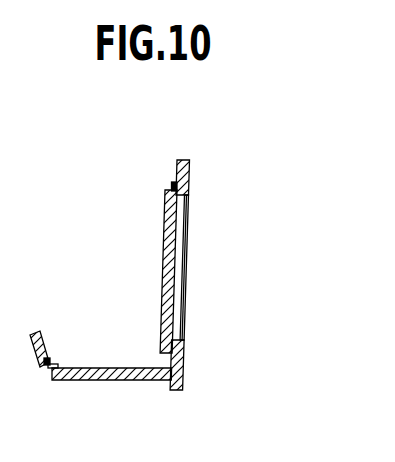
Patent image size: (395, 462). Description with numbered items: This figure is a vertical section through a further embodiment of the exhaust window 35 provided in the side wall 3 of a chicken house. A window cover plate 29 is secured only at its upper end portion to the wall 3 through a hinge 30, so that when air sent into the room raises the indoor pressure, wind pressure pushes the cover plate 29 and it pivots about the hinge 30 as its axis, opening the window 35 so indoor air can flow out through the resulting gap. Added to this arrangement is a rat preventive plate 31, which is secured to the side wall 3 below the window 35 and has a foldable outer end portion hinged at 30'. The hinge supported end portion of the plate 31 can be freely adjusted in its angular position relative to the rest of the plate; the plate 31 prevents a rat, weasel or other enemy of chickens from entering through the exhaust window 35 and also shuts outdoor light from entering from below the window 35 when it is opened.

The side wall 3 is at (186, 182).
The window cover plate 29 is at (165, 218).
The hinge 30 is at (137, 152).
The hinge 30' is at (73, 309).
The rat preventive plate 31 is at (106, 378).
The exhaust window 35 is at (187, 250).